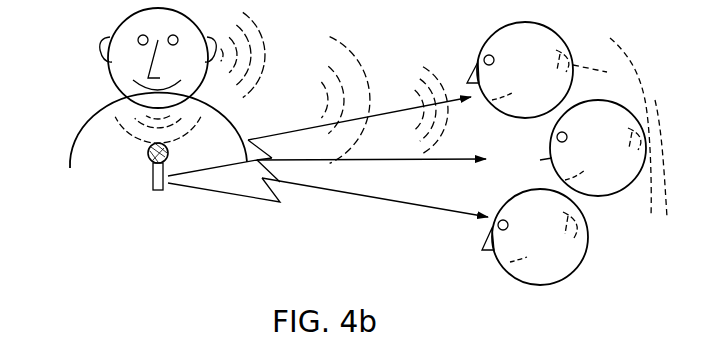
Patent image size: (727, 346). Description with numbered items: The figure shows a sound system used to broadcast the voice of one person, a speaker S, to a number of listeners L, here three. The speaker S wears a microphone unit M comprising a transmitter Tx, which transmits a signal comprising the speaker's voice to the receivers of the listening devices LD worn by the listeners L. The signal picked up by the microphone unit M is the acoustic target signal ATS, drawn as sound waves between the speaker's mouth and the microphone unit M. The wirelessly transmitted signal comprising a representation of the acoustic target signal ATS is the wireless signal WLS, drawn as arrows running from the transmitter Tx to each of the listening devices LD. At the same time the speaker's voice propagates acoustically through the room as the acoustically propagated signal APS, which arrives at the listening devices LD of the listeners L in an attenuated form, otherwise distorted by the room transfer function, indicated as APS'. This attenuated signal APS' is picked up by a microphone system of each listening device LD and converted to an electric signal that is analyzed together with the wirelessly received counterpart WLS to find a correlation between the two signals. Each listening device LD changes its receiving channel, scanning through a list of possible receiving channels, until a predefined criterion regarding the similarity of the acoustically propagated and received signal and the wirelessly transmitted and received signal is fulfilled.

The speaker S is at (107, 87).
The acoustic target signal ATS is at (198, 136).
The acoustically propagated signal APS is at (283, 54).
The attenuated acoustically propagated signal APS' is at (384, 100).
The microphone unit M is at (148, 178).
The transmitter Tx is at (214, 174).
The wireless signal WLS is at (391, 204).
The listeners L is at (556, 30).
The listening devices LD is at (588, 230).